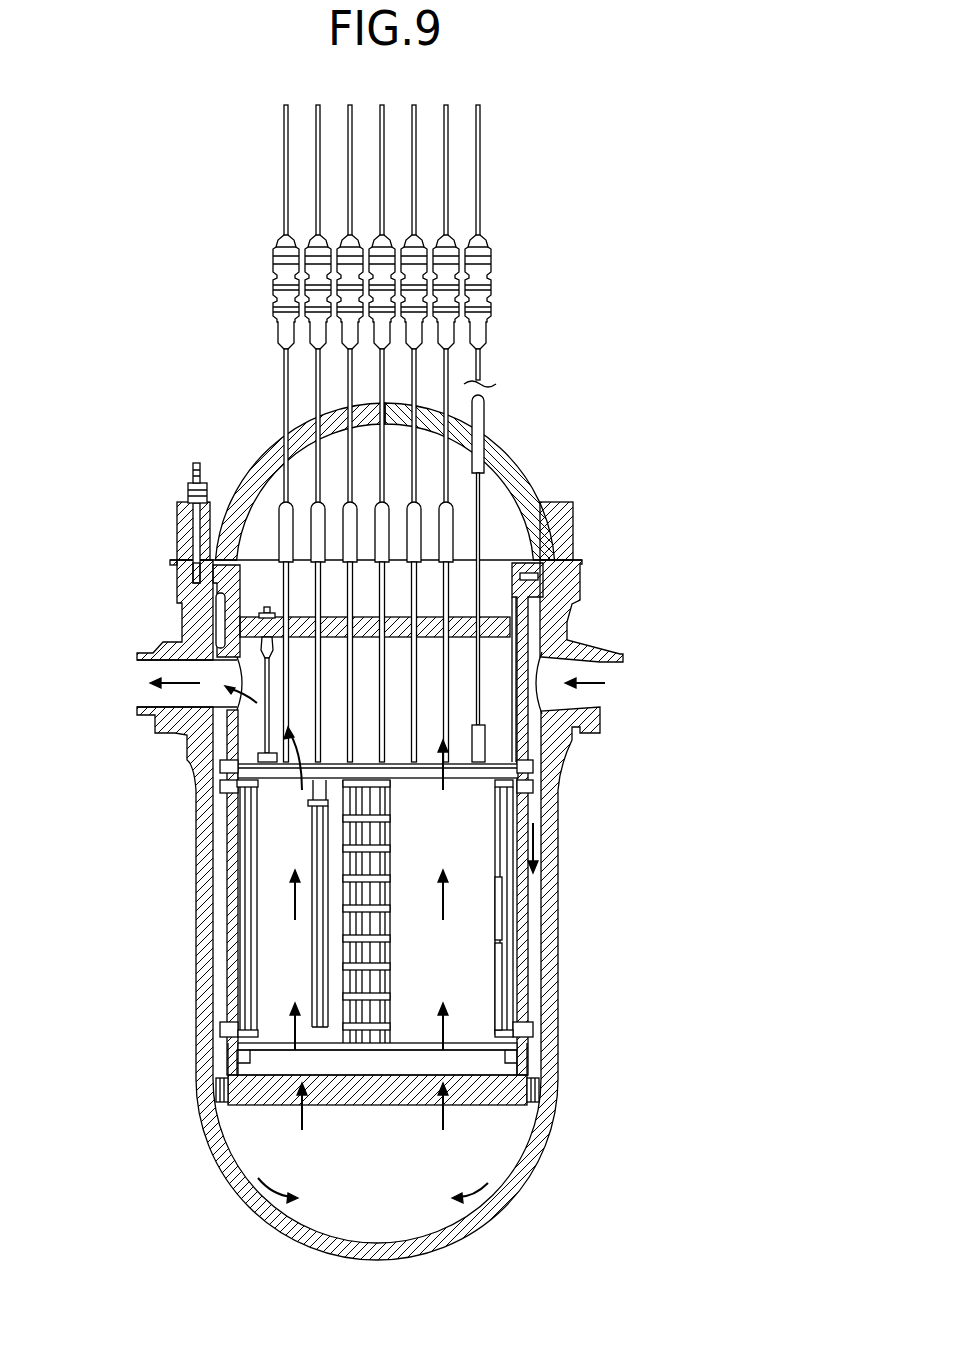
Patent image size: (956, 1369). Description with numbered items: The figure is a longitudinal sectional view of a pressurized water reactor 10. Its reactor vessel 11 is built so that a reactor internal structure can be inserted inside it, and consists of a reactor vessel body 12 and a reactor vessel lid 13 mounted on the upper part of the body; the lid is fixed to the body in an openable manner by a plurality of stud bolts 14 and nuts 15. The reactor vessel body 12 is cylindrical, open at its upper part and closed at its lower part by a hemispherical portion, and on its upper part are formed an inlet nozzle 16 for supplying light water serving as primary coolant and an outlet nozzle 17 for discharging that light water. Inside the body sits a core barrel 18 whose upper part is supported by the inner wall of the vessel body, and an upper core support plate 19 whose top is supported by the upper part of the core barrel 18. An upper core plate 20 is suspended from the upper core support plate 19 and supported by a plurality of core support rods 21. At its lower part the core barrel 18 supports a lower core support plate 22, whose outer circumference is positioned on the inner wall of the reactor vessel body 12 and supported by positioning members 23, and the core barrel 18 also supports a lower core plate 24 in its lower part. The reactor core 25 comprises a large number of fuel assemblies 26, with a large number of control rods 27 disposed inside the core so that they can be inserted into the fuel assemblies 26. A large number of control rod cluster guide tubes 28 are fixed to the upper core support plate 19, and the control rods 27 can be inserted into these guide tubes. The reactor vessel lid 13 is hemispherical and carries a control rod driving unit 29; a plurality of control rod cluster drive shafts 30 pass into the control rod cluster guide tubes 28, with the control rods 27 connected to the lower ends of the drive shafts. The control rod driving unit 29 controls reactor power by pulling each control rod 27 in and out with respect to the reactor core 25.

The pressurized water reactor 10 is at (146, 239).
The reactor vessel 11 is at (583, 578).
The reactor vessel body 12 is at (557, 847).
The reactor vessel lid 13 is at (522, 483).
The stud bolt 14 is at (190, 540).
The nut 15 is at (193, 483).
The inlet nozzle 16 is at (587, 693).
The outlet nozzle 17 is at (152, 690).
The core barrel 18 is at (519, 914).
The upper core support plate 19 is at (462, 617).
The upper core plate 20 is at (500, 765).
The core support rod 21 is at (211, 662).
The lower core support plate 22 is at (253, 1094).
The positioning member 23 is at (215, 1084).
The lower core plate 24 is at (280, 1045).
The reactor core 25 is at (517, 967).
The fuel assembly 26 is at (386, 828).
The control rod 27 is at (313, 823).
The control rod cluster guide tube 28 is at (317, 544).
The control rod driving unit 29 is at (541, 214).
The control rod cluster drive shaft 30 is at (318, 372).